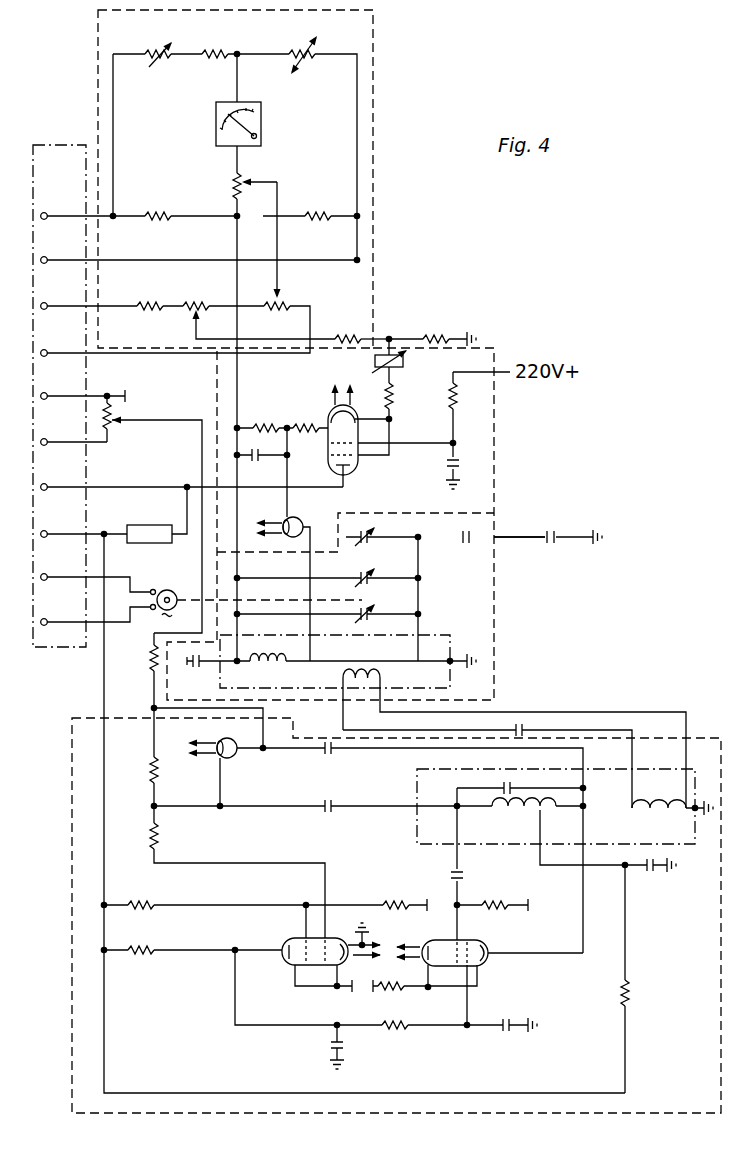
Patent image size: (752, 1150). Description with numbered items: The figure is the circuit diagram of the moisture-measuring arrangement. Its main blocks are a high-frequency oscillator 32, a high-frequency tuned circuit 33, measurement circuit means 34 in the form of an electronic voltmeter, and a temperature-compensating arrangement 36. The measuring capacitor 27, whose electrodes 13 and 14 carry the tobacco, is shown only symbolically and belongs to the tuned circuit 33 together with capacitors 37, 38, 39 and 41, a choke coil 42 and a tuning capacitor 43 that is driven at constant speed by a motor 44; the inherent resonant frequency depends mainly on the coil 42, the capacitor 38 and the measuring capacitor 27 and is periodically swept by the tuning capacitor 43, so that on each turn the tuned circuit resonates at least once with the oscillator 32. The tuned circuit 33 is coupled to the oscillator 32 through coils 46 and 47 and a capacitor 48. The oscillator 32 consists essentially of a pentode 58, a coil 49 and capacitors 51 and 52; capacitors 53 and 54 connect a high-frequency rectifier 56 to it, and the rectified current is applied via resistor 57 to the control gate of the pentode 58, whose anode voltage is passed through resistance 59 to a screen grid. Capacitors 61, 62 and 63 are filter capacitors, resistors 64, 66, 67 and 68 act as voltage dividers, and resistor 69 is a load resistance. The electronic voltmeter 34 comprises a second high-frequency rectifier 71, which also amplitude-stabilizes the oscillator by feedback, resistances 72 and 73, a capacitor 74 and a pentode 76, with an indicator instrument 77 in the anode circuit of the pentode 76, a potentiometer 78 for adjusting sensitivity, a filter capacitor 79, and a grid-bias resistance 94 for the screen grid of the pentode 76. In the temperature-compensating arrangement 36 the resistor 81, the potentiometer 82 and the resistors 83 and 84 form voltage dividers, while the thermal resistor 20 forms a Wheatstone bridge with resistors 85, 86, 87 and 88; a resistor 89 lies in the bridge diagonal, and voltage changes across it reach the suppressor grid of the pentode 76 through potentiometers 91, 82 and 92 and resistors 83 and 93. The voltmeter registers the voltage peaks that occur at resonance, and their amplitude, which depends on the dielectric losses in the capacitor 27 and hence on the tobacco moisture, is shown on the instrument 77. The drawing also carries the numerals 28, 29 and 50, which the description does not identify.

The temperature-compensating arrangement 36 is at (374, 108).
The resistor 86 is at (148, 36).
The resistor 85 is at (217, 51).
The thermal resistor 20 is at (303, 50).
The resistor 87 is at (160, 190).
The resistor 89 is at (232, 182).
The resistor 88 is at (330, 186).
The resistor 81 is at (150, 292).
The potentiometer 82 is at (259, 307).
The potentiometer 91 is at (278, 302).
The resistor 83 is at (353, 332).
The resistor 84 is at (436, 332).
The potentiometer 92 is at (405, 366).
The resistor 93 is at (396, 396).
The grid-bias resistor 94 is at (458, 400).
The resistance 72 is at (275, 405).
The resistance 73 is at (308, 420).
The capacitor 74 is at (248, 464).
The measurement circuit means 34 is at (356, 480).
The pentode 76 is at (328, 455).
The filter capacitor 79 is at (456, 464).
The potentiometer 78 is at (113, 434).
The second high-frequency rectifier 71 is at (298, 516).
The indicator instrument 77 is at (152, 512).
The measuring capacitor 27 is at (543, 520).
The electrode 14 is at (544, 542).
The electrode 13 is at (556, 542).
The lead 28 is at (522, 537).
The ground lead 29 is at (578, 535).
The capacitor 39 is at (370, 544).
The capacitor 41 is at (465, 545).
The capacitor 38 is at (372, 586).
The tuning capacitor 43 is at (374, 621).
The high-frequency tuned circuit 33 is at (495, 607).
The motor 44 is at (180, 576).
The resistor 64 is at (154, 658).
The choke coil 42 is at (270, 657).
The capacitor 37 is at (202, 671).
The coil 47 is at (381, 676).
The capacitor 48 is at (524, 723).
The high-frequency oscillator 32 is at (698, 739).
The high-frequency rectifier 56 is at (215, 742).
The resistor 66 is at (152, 771).
The capacitor 54 is at (333, 758).
The capacitor 53 is at (337, 802).
The capacitor 51 is at (512, 785).
The coil 49 is at (513, 820).
The coil 46 is at (664, 817).
The resistor 57 is at (152, 843).
The resistor 67 is at (134, 878).
The resistor 68 is at (392, 876).
The capacitor 52 is at (466, 871).
The filter capacitor 61 is at (652, 867).
The load resistance 69 is at (134, 923).
The pentode 58 is at (292, 938).
The electron tube 50 is at (492, 942).
The filter capacitor 63 is at (334, 1048).
The resistance 59 is at (399, 1030).
The filter capacitor 62 is at (508, 1028).